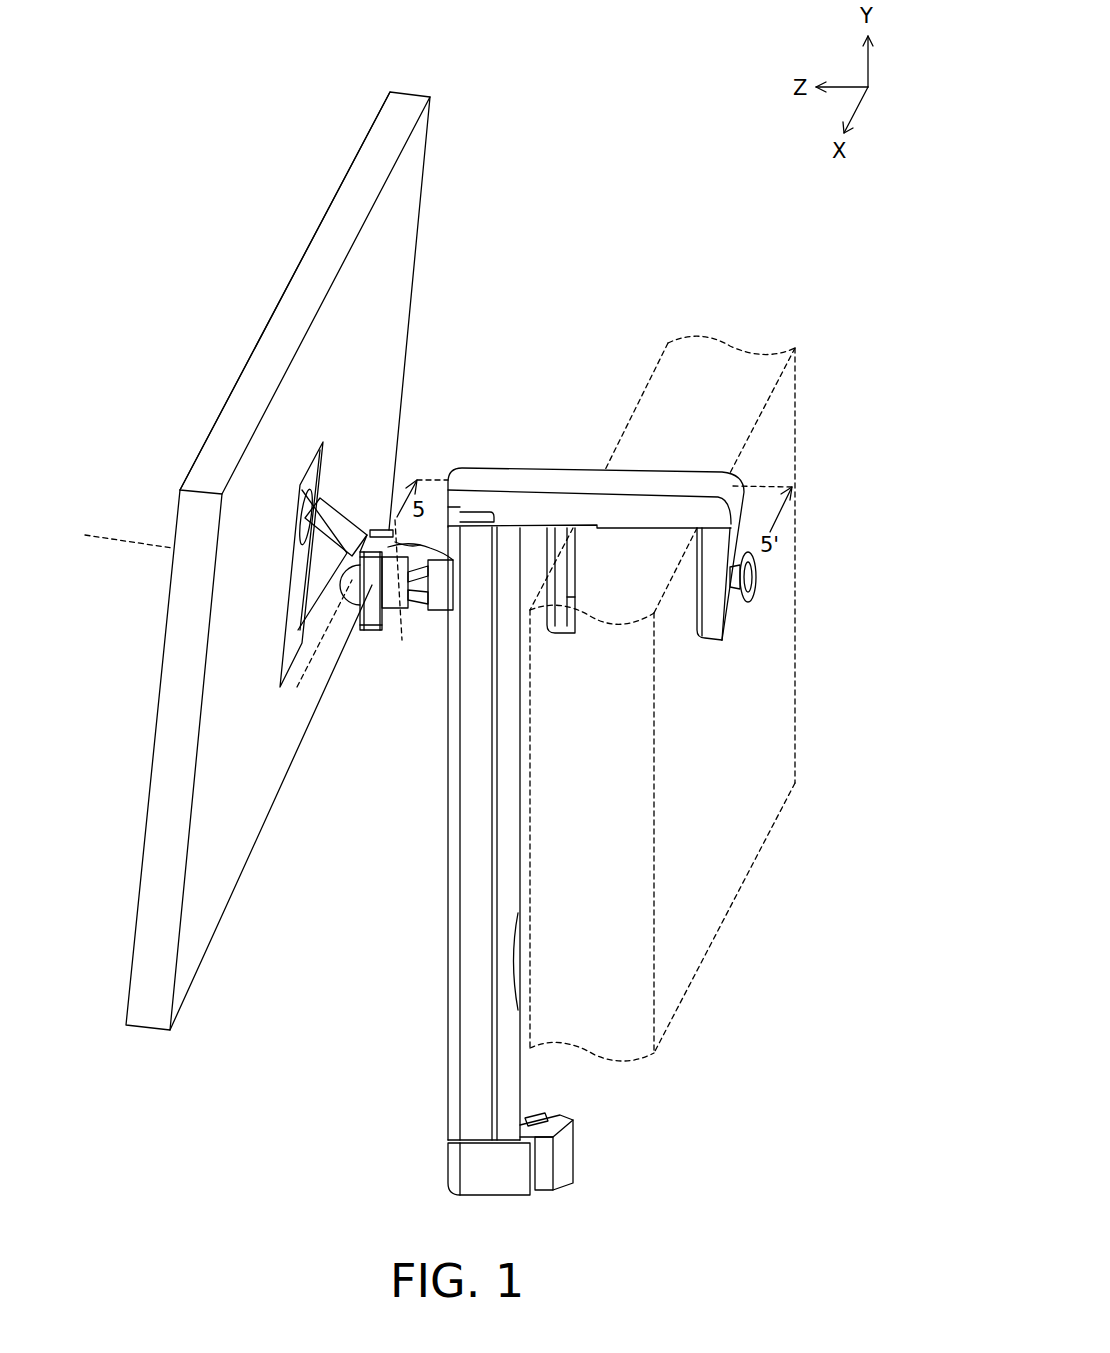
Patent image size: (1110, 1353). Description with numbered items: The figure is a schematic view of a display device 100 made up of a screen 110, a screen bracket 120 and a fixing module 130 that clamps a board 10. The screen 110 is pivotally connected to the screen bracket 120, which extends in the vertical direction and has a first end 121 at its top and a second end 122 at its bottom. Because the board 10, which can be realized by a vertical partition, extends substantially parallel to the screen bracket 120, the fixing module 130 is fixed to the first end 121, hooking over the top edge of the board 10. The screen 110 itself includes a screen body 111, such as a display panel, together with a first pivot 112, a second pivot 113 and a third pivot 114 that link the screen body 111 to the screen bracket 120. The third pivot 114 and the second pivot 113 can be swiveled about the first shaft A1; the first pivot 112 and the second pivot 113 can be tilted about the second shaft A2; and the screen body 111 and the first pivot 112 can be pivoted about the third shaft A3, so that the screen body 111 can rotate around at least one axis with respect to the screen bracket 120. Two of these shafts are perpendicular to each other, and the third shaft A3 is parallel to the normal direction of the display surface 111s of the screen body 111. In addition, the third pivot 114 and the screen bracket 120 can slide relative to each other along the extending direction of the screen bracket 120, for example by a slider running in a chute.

The display device 100 is at (544, 163).
The screen 110 is at (497, 265).
The screen body 111 is at (311, 561).
The display surface 111s is at (364, 142).
The first pivot 112 is at (333, 520).
The second pivot 113 is at (346, 572).
The third pivot 114 is at (430, 548).
The screen bracket 120 is at (505, 790).
The first end 121 is at (483, 543).
The second end 122 is at (505, 1090).
The fixing module 130 is at (657, 452).
The board 10 is at (772, 753).
The first shaft A1 is at (399, 597).
The second shaft A2 is at (316, 647).
The third shaft A3 is at (109, 536).